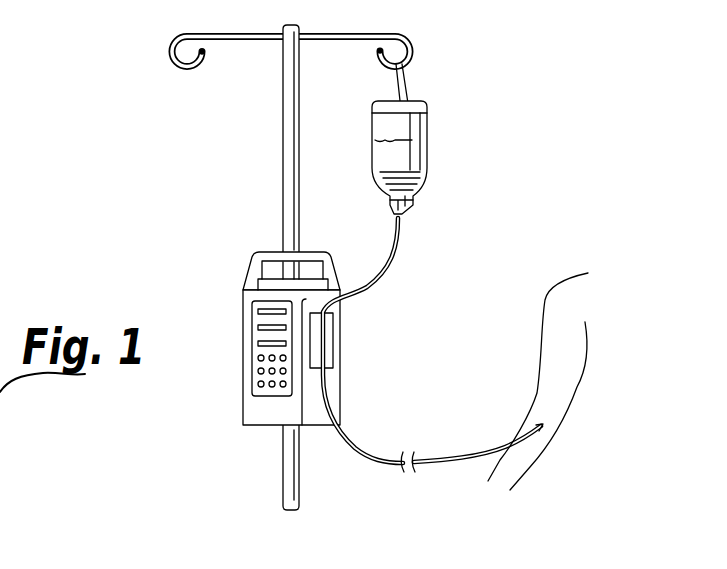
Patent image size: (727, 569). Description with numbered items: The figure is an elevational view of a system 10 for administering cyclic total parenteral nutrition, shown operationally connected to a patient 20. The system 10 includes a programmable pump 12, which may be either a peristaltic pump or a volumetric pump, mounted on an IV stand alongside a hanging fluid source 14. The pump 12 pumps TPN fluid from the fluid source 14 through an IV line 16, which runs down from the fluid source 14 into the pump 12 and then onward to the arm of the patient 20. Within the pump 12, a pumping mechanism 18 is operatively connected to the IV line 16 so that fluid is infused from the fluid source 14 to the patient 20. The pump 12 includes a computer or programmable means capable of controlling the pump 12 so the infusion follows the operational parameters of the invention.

The system 10 is at (211, 265).
The programmable pump 12 is at (243, 421).
The fluid source 14 is at (428, 157).
The IV line 16 is at (390, 262).
The pumping mechanism 18 is at (334, 343).
The patient 20 is at (547, 343).